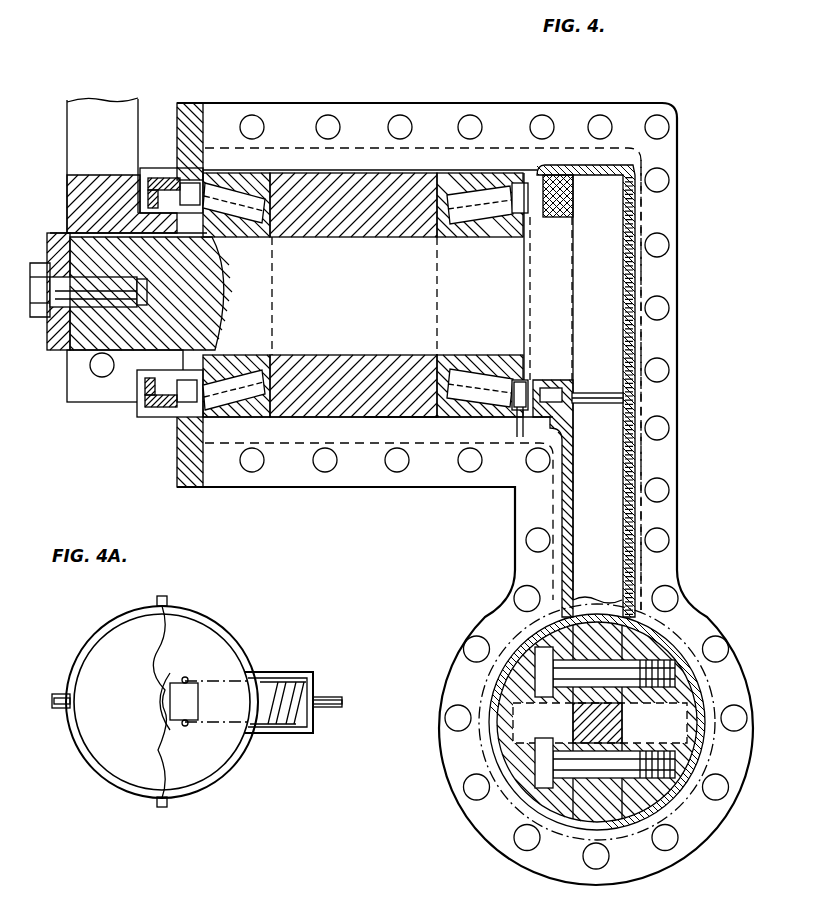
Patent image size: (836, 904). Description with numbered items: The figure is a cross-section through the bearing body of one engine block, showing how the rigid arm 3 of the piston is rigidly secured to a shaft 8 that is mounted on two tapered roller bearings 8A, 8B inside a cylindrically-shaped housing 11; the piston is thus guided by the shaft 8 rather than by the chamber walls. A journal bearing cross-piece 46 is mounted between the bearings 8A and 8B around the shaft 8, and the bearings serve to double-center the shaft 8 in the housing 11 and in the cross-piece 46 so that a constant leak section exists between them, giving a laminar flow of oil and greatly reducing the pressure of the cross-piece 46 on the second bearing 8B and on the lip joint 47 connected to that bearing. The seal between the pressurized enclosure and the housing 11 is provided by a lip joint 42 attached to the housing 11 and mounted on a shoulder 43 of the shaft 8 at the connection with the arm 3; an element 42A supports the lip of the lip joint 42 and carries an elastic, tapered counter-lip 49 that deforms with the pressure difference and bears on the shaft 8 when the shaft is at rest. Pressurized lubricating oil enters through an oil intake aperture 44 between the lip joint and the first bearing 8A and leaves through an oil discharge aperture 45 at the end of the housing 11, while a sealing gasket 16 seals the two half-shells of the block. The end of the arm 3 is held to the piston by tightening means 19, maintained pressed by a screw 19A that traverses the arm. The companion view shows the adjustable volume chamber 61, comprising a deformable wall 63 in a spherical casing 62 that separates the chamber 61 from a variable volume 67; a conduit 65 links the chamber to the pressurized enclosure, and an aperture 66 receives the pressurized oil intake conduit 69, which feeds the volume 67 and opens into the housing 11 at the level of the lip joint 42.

In FIG. 4, the rigid arm 3 is at (605, 510).
In FIG. 4, the shaft 8 is at (380, 297).
In FIG. 4, the bearing 8A is at (548, 108).
In FIG. 4, the bearing 8B is at (250, 443).
In FIG. 4, the housing 11 is at (368, 417).
In FIG. 4, the sealing joint or gasket 16 is at (628, 368).
In FIG. 4, the tightening means 19 is at (490, 694).
In FIG. 4, the screw 19A is at (540, 668).
In FIG. 4, the lip joint 42 is at (572, 165).
In FIG. 4, the element 42A is at (516, 172).
In FIG. 4, the shoulder 43 is at (560, 289).
In FIG. 4, the oil intake aperture 44 is at (526, 292).
In FIG. 4, the oil discharge aperture 45 is at (168, 415).
In FIG. 4, the journal bearing cross-piece 46 is at (437, 120).
In FIG. 4, the lip joint 47 is at (165, 180).
In FIG. 4, the elastic counter-lip 49 is at (542, 383).
In FIG. 4, the pressurized oil intake conduit 69 is at (514, 425).
In FIG. 4A, the adjustable volume chamber 61 is at (122, 728).
In FIG. 4A, the casing 62 is at (83, 655).
In FIG. 4A, the deformable wall 63 is at (160, 652).
In FIG. 4A, the conduit 65 is at (52, 697).
In FIG. 4A, the aperture 66 is at (275, 705).
In FIG. 4A, the variable volume 67 is at (212, 660).